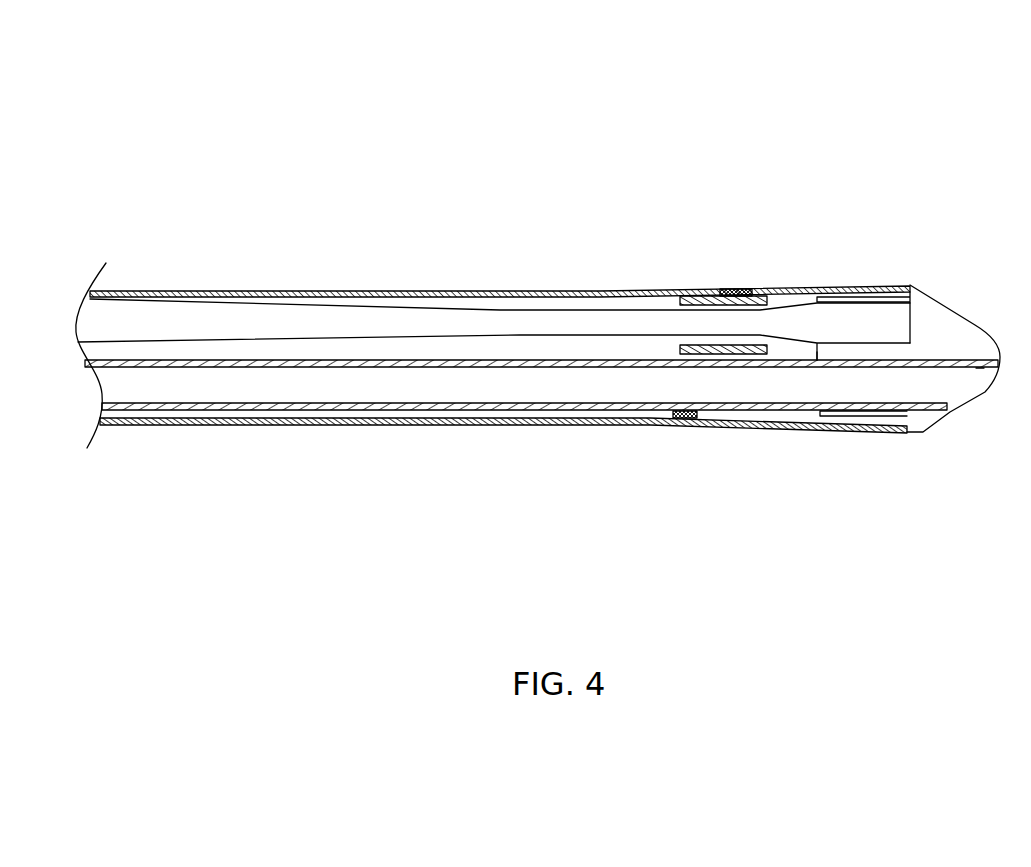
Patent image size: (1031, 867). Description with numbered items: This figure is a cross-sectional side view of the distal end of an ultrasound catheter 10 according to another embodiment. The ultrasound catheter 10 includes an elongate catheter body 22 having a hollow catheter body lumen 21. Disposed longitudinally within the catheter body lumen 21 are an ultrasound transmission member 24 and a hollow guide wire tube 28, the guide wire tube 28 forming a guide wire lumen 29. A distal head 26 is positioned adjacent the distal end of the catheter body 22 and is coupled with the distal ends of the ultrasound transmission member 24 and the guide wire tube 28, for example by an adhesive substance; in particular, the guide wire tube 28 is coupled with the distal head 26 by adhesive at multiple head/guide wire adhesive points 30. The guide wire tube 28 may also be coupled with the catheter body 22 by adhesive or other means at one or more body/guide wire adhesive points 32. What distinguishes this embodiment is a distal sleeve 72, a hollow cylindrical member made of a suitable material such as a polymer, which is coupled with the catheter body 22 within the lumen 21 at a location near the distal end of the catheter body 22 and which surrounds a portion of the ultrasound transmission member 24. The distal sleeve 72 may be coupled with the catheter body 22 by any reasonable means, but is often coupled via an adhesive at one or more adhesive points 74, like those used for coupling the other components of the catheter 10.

The ultrasound catheter 10 is at (500, 88).
The catheter body lumen 21 is at (494, 346).
The catheter body 22 is at (550, 286).
The ultrasound transmission member 24 is at (231, 316).
The distal head 26 is at (924, 281).
The guide wire tube 28 is at (350, 410).
The guide wire lumen 29 is at (442, 390).
The head/guide wire adhesive points 30 is at (983, 368).
The body/guide wire adhesive points 32 is at (684, 423).
The distal sleeve 72 is at (721, 293).
The adhesive points 74 is at (744, 291).